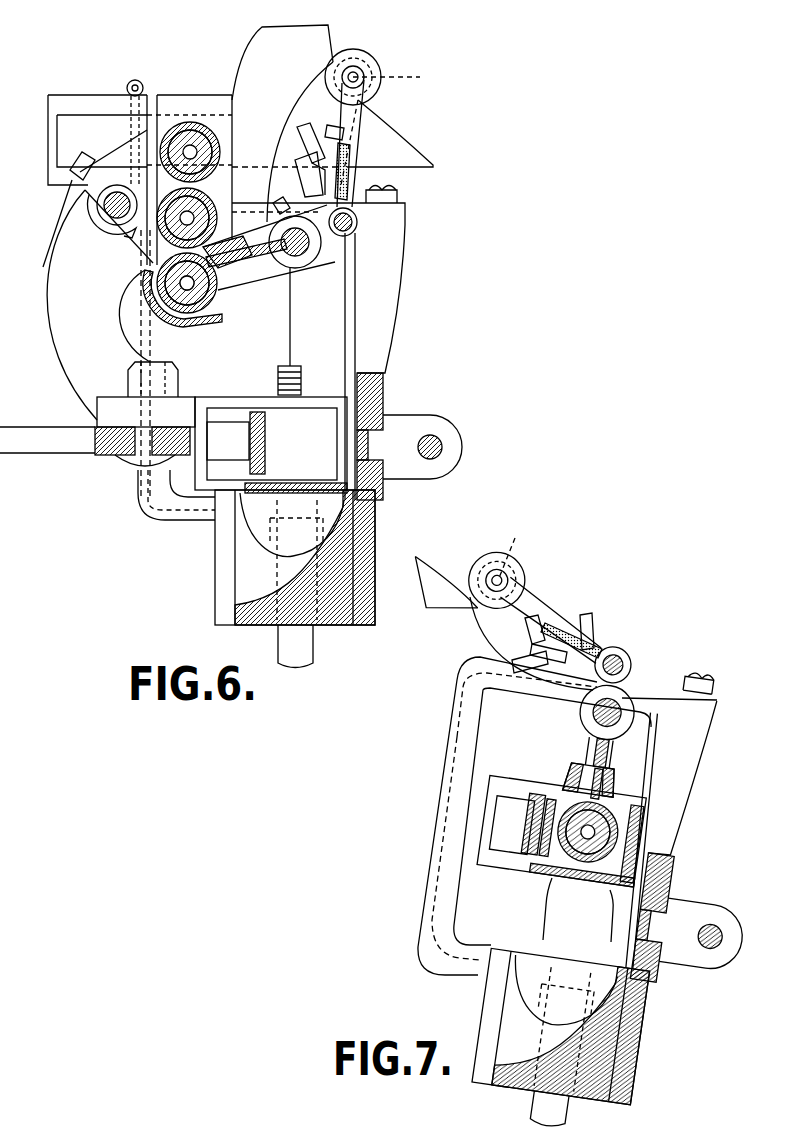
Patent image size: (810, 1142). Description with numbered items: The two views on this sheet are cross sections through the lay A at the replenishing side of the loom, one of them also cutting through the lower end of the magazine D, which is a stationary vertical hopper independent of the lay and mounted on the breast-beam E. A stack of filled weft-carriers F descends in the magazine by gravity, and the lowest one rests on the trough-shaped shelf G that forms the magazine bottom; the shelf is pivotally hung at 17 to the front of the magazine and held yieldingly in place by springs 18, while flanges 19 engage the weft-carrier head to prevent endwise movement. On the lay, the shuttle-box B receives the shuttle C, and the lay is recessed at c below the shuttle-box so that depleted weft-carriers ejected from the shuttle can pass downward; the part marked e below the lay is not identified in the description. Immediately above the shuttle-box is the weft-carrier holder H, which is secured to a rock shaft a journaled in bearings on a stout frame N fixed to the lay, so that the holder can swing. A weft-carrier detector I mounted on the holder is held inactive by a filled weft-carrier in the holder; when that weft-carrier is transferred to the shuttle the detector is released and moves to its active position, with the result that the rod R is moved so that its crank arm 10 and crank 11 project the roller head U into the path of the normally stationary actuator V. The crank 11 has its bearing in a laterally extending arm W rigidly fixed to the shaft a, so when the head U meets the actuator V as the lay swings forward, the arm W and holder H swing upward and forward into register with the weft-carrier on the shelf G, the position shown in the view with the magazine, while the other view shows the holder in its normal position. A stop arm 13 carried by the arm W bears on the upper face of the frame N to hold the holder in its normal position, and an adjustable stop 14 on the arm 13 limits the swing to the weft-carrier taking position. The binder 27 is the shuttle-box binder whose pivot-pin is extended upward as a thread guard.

In FIG. 6, the magazine D is at (172, 105).
In FIG. 6, the breast-beam E is at (193, 135).
In FIG. 6, the actuator V is at (318, 46).
In FIG. 7, the actuator V is at (430, 582).
In FIG. 6, the arm W is at (372, 63).
In FIG. 7, the arm W is at (500, 628).
In FIG. 6, the crank 11 is at (350, 76).
In FIG. 7, the crank 11 is at (500, 580).
In FIG. 6, the roller head U is at (399, 85).
In FIG. 7, the roller head U is at (513, 547).
In FIG. 6, the adjustable stop 14 is at (330, 130).
In FIG. 7, the adjustable stop 14 is at (600, 645).
In FIG. 6, the stop arm 13 is at (300, 140).
In FIG. 7, the stop arm 13 is at (535, 672).
In FIG. 6, the crank arm 10 is at (352, 130).
In FIG. 7, the crank arm 10 is at (540, 612).
In FIG. 6, the shelf pivot 17 is at (105, 204).
In FIG. 6, the springs 18 is at (108, 217).
In FIG. 6, the rod R is at (352, 230).
In FIG. 7, the rod R is at (620, 660).
In FIG. 6, the rock shaft a is at (302, 252).
In FIG. 7, the rock shaft a is at (615, 722).
In FIG. 6, the shelf G is at (150, 302).
In FIG. 6, the flanges 19 is at (207, 290).
In FIG. 6, the weft-carrier detector I is at (258, 262).
In FIG. 7, the weft-carrier detector I is at (580, 760).
In FIG. 6, the weft-carrier holder H is at (272, 262).
In FIG. 7, the weft-carrier holder H is at (615, 795).
In FIG. 6, the weft-carrier F is at (196, 302).
In FIG. 7, the weft-carrier F is at (615, 832).
In FIG. 6, the shuttle-box B is at (362, 410).
In FIG. 7, the shuttle-box B is at (493, 862).
In FIG. 6, the binder 27 is at (266, 440).
In FIG. 7, the binder 27 is at (530, 820).
In FIG. 6, the frame N is at (165, 500).
In FIG. 7, the frame N is at (695, 715).
In FIG. 6, the recess c is at (245, 575).
In FIG. 7, the recess c is at (515, 1025).
In FIG. 7, the shuttle C is at (548, 835).
In FIG. 6, the lay A is at (355, 615).
In FIG. 7, the lay A is at (640, 1030).
In FIG. 6, the outlet pipe e is at (300, 650).